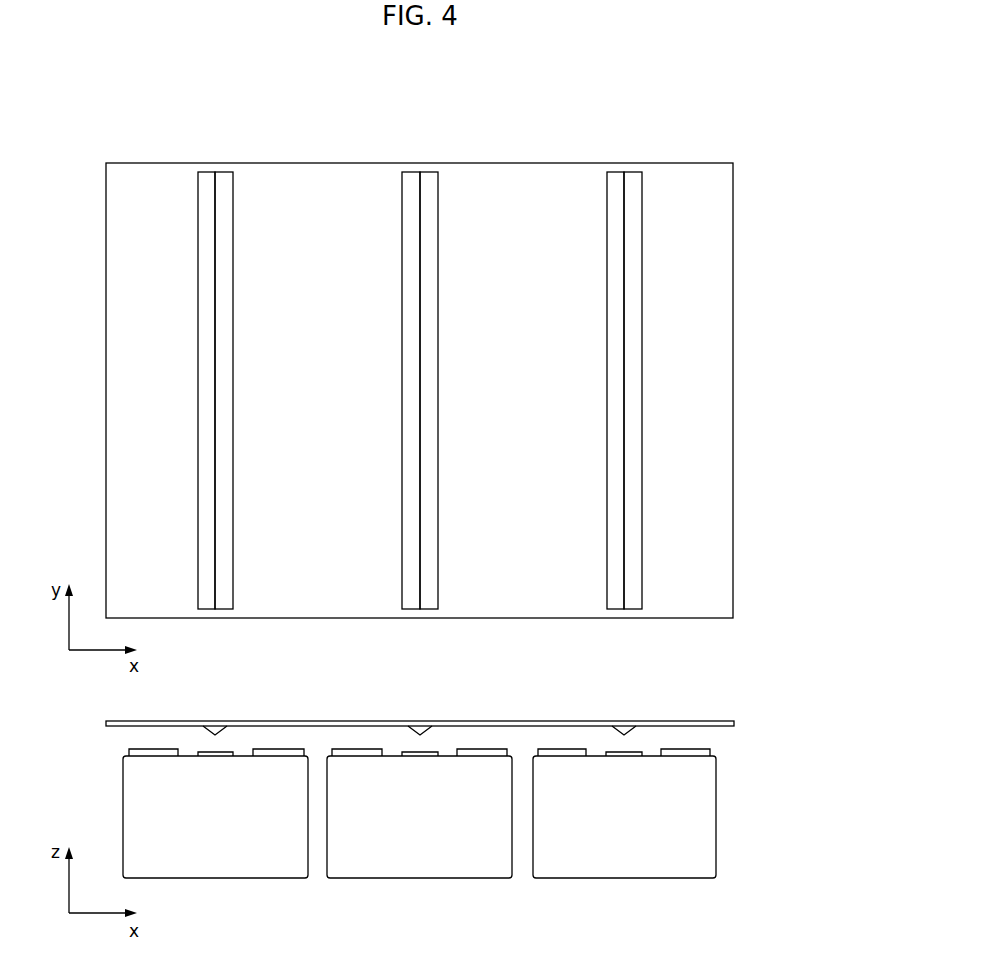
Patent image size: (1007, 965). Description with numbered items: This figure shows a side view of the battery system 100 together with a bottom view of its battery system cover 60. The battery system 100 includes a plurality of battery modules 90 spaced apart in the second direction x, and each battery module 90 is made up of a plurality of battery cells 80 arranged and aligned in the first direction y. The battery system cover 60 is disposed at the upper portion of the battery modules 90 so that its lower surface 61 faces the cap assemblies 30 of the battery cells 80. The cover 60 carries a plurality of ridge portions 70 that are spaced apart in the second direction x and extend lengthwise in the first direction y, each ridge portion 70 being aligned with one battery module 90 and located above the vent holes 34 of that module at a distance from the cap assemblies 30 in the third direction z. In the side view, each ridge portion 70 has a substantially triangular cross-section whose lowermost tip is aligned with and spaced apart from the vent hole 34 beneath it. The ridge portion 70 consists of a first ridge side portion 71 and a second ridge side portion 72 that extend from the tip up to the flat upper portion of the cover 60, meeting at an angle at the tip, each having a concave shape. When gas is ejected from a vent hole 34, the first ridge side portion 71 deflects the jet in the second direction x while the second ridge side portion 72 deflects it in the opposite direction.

The battery system 100 is at (652, 130).
The battery system cover 60 is at (733, 368).
The lower surface 61 is at (720, 200).
The ridge portion 70 is at (625, 300).
The first ridge side portion 71 is at (633, 450).
The second ridge side portion 72 is at (606, 449).
The battery cell 80 is at (716, 810).
The battery module 90 is at (216, 878).
The cap assembly 30 is at (388, 756).
The vent hole 34 is at (229, 752).